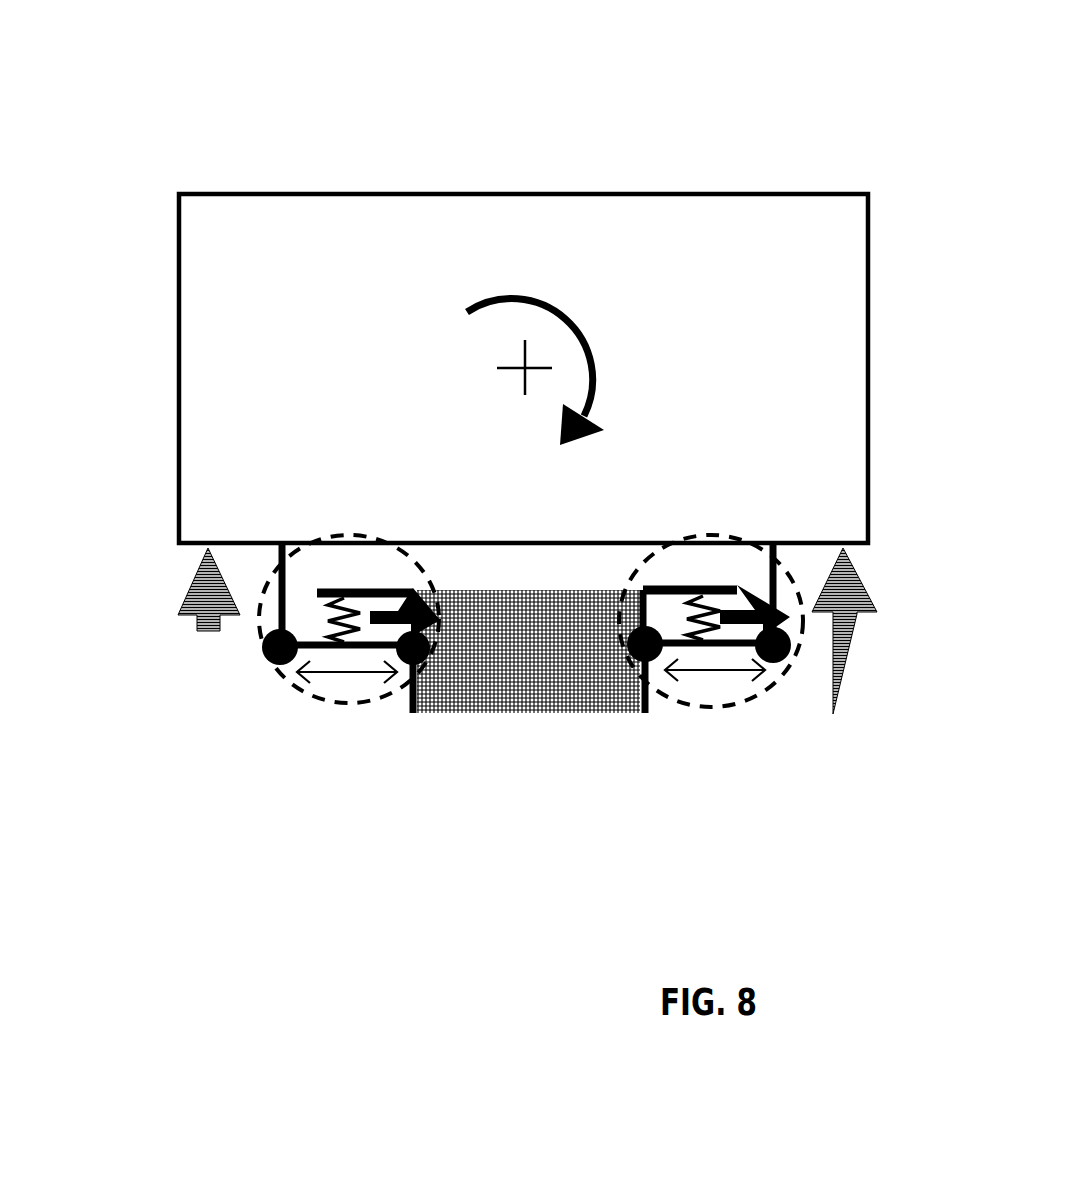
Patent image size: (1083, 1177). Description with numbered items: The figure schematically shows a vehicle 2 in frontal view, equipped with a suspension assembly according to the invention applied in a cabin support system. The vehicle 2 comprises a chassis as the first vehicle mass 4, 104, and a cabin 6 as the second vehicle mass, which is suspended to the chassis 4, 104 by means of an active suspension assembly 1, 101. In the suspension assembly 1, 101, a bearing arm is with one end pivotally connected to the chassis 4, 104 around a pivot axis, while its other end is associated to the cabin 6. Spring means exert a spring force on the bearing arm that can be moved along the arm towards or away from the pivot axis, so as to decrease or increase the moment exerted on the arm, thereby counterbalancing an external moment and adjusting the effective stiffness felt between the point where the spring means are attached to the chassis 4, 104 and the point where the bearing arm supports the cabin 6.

The vehicle 2 is at (126, 105).
The cabin 6 is at (311, 278).
The chassis 4 is at (565, 671).
The chassis 104 is at (528, 651).
The suspension assembly 1 is at (675, 716).
The active suspension assembly 101 is at (531, 679).